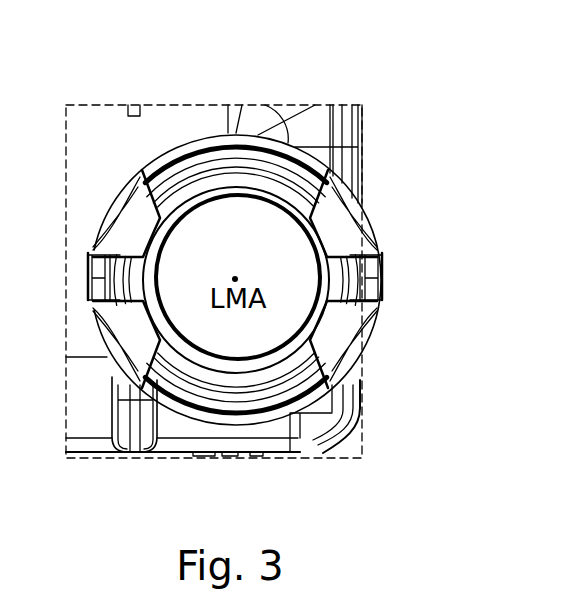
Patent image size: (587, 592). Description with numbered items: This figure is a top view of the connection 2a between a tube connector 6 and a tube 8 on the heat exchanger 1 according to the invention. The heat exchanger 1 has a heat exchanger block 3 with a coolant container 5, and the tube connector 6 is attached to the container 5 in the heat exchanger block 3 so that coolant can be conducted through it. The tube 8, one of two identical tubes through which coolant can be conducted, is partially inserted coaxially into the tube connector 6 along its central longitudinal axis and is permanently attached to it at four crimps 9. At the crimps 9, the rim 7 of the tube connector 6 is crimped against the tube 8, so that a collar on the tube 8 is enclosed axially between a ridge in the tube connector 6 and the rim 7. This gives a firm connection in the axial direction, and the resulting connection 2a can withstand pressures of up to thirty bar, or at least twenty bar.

The heat exchanger 1 is at (382, 82).
The connection 2a is at (372, 190).
The heat exchanger block 3 is at (355, 147).
The coolant container 5 is at (311, 122).
The tube connector 6 is at (385, 280).
The rim 7 is at (200, 138).
The tube 8 is at (240, 367).
The crimp 9 is at (122, 222).